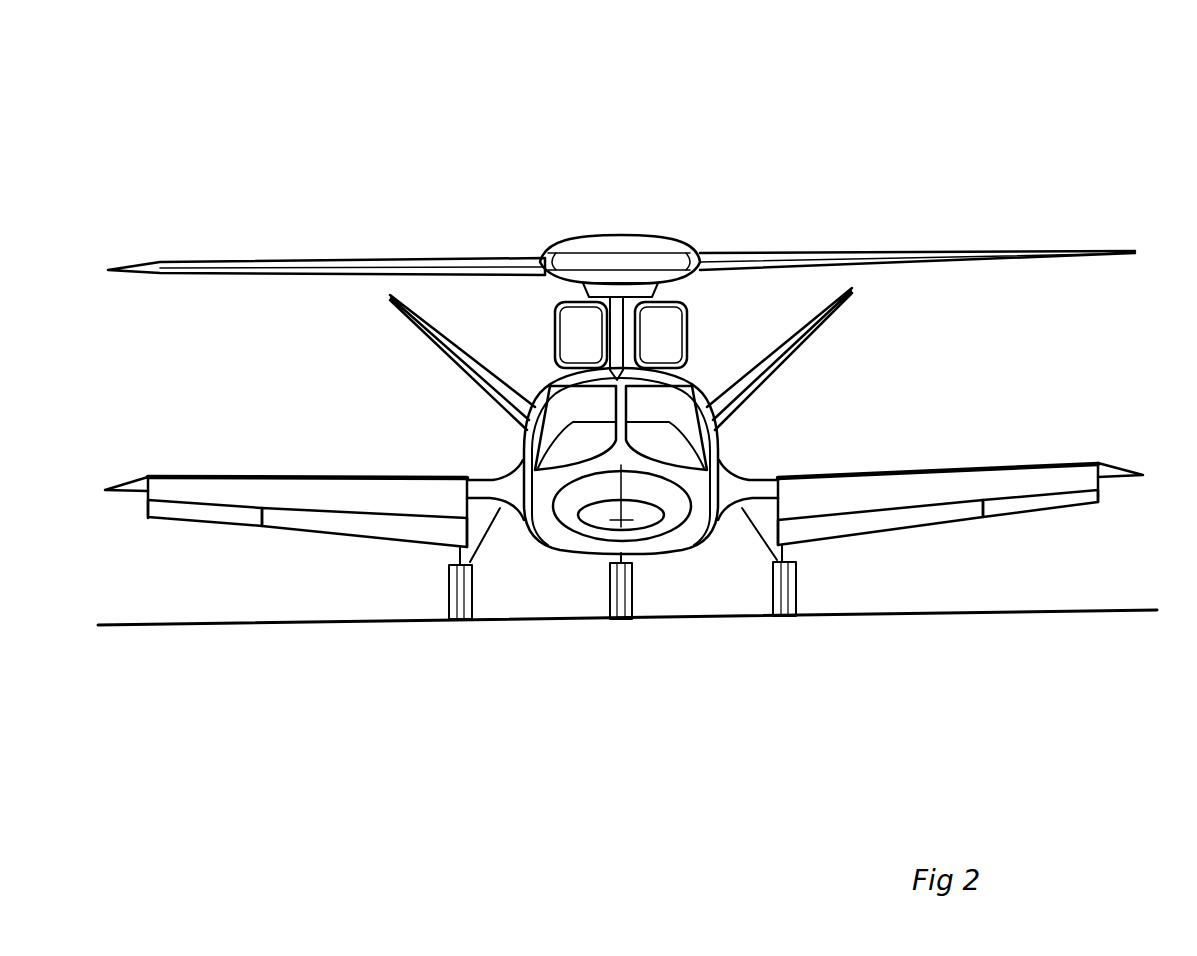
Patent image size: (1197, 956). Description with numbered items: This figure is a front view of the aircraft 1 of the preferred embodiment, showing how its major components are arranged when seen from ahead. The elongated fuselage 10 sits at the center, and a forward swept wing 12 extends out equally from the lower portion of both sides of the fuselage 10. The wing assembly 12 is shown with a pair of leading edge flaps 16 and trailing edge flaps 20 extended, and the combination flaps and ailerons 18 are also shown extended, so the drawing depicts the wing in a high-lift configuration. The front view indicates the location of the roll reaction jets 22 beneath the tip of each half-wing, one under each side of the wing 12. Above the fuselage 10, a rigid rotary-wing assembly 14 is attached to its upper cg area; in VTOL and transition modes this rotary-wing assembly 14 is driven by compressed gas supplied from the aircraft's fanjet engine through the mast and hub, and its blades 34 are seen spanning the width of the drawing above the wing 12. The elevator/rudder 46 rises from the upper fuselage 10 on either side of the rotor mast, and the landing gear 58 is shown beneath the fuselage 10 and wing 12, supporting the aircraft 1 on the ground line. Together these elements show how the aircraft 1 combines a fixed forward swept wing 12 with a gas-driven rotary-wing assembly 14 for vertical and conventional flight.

The aircraft 1 is at (668, 142).
The fuselage 10 is at (700, 488).
The forward swept wing 12 is at (493, 487).
The rigid rotary-wing assembly 14 is at (600, 236).
The leading edge flaps 16 is at (310, 493).
The combination flaps and ailerons 18 is at (208, 515).
The trailing edge flaps 20 is at (340, 527).
The roll reaction jets 22 is at (110, 495).
The rotor blade 34 is at (370, 258).
The elevator/rudder 46 is at (812, 338).
The landing gear 58 is at (465, 620).